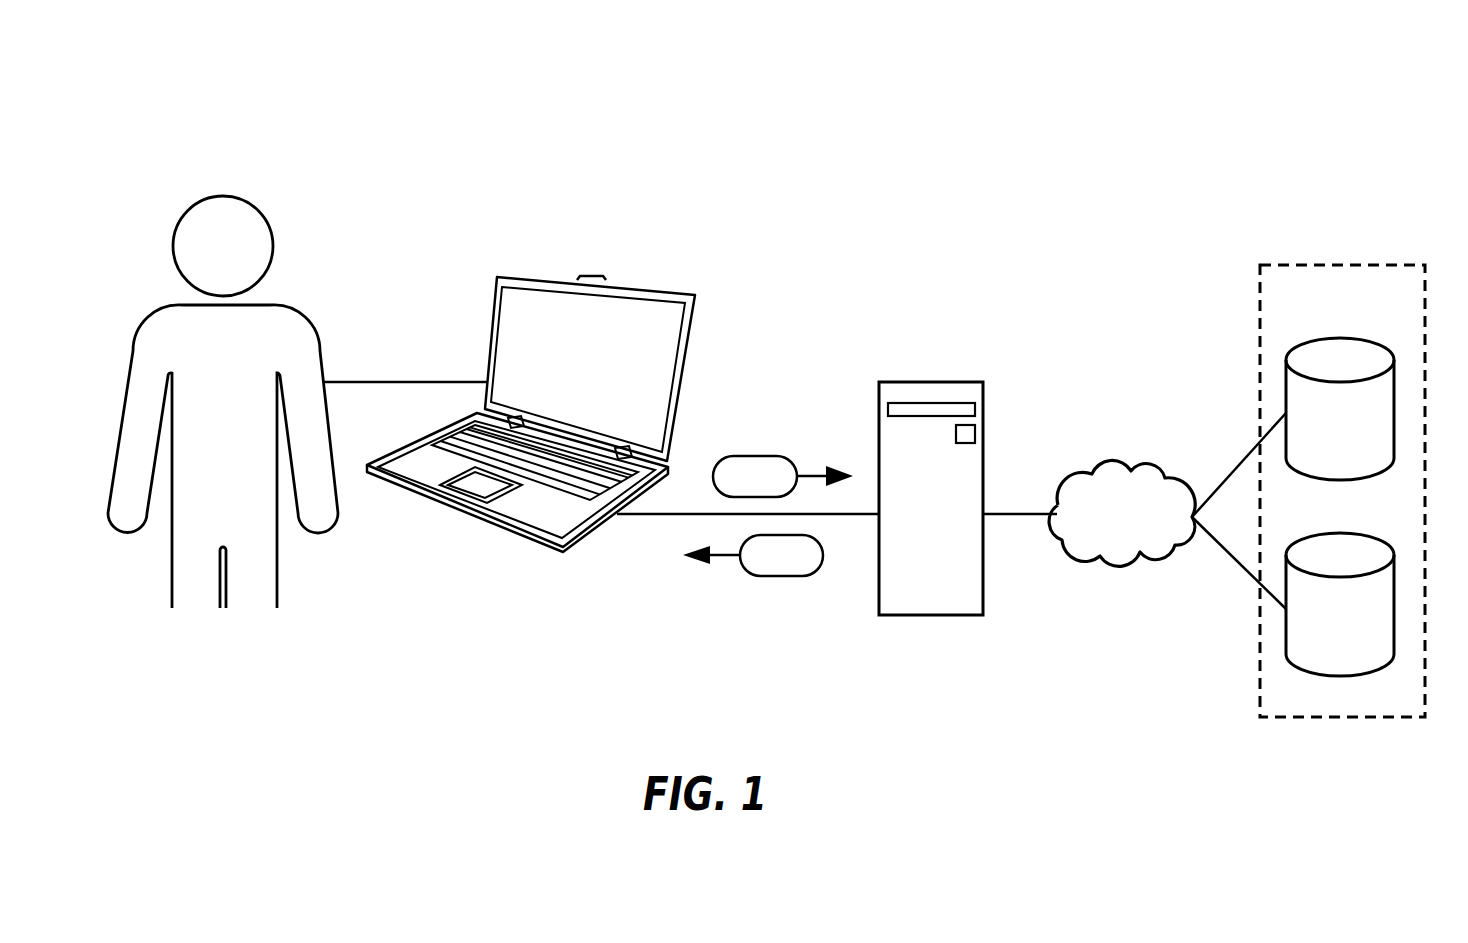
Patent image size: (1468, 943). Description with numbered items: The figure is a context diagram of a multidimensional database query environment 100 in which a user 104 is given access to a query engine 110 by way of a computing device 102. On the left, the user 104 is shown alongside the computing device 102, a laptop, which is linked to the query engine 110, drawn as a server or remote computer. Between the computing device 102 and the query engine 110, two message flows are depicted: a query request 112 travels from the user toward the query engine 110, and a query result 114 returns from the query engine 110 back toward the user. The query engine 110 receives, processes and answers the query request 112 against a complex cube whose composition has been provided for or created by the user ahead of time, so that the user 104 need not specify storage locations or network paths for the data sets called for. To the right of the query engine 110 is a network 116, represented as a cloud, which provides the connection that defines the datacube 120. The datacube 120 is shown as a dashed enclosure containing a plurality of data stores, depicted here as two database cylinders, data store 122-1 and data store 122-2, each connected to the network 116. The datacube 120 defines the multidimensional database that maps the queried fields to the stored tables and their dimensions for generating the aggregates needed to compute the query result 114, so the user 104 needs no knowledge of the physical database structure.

The multidimensional database query environment 100 is at (445, 85).
The computing device 102 is at (645, 290).
The user 104 is at (223, 196).
The query engine 110 is at (912, 578).
The query request 112 is at (760, 456).
The query result 114 is at (785, 577).
The network 116 is at (1104, 525).
The datacube 120 is at (1321, 311).
The data store 122-1 is at (1310, 431).
The data store 122-2 is at (1310, 630).